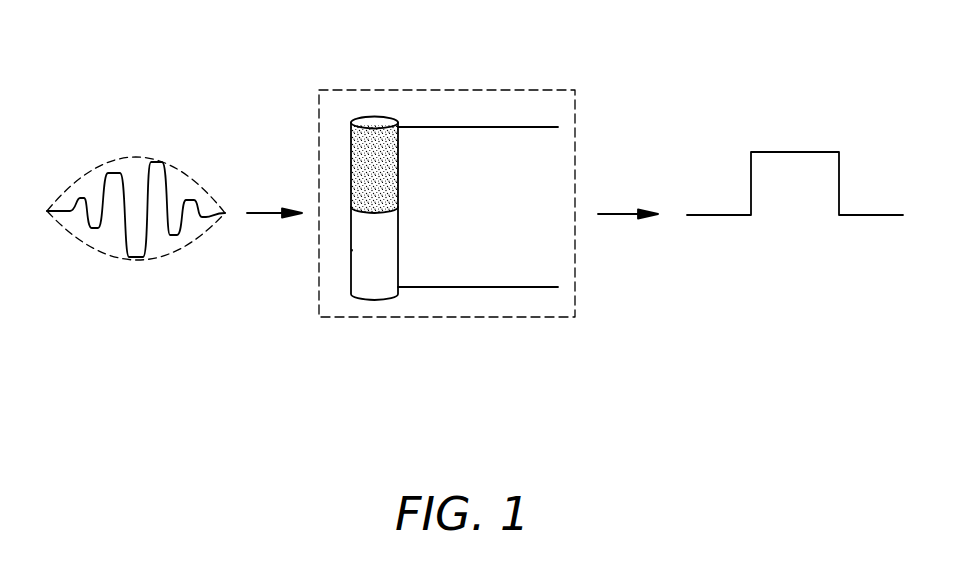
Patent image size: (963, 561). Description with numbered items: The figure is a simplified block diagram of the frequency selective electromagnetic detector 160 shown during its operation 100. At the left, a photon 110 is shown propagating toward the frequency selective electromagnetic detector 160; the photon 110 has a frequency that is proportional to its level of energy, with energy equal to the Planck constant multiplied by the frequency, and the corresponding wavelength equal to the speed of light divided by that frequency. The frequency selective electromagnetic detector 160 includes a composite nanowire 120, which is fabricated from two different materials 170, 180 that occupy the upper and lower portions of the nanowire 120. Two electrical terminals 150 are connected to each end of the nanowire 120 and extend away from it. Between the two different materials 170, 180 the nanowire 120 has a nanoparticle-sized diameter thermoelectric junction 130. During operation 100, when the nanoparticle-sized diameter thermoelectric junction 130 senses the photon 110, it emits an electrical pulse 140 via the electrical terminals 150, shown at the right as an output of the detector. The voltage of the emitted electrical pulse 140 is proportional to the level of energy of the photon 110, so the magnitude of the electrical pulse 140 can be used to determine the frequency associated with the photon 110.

The operation 100 is at (591, 378).
The photon 110 is at (120, 160).
The composite nanowire 120 is at (356, 96).
The nanoparticle-sized diameter thermoelectric junction 130 is at (403, 205).
The electrical pulse 140 is at (768, 152).
The electrical terminals 150 is at (496, 128).
The frequency selective electromagnetic detector 160 is at (352, 317).
The first material 170 is at (362, 173).
The second material 180 is at (362, 233).